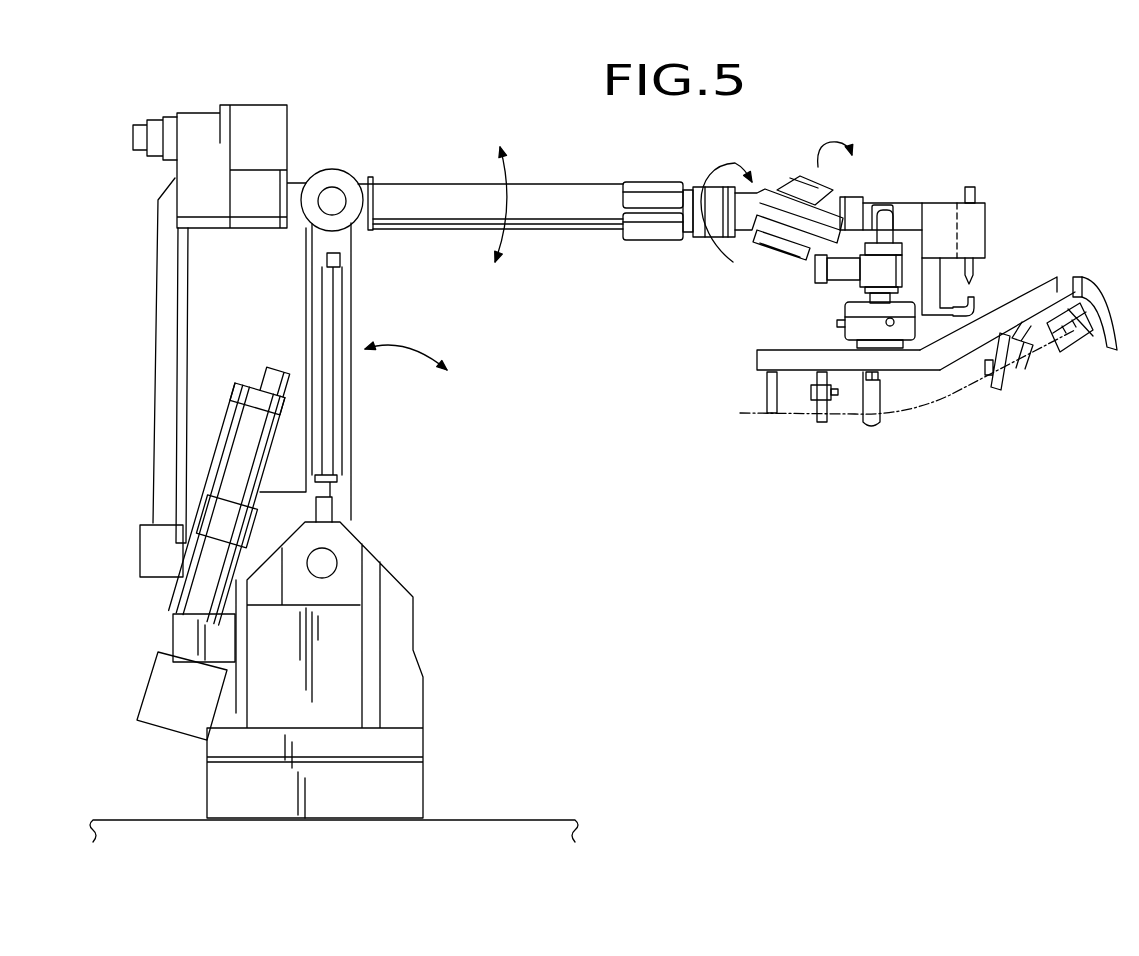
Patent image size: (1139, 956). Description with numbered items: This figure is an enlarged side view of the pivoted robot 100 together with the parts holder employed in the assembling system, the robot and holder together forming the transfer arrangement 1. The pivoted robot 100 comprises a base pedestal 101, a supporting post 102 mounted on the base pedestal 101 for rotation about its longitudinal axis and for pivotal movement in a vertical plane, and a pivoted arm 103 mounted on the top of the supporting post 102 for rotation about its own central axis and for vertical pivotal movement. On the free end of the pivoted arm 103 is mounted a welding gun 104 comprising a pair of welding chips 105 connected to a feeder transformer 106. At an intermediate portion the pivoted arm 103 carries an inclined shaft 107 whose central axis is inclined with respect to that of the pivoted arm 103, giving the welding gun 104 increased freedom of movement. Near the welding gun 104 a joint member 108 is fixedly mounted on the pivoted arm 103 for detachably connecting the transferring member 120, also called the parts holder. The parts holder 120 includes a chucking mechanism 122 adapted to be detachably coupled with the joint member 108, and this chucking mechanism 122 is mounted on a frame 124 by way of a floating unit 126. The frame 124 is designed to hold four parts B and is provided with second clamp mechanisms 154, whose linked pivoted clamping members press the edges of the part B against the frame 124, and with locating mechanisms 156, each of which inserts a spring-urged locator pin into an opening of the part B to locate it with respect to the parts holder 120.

The industrial robot 1 is at (673, 138).
The pivoted robot 100 is at (144, 332).
The base pedestal 101 is at (400, 597).
The supporting post 102 is at (353, 318).
The pivoted arm 103 is at (563, 188).
The welding gun 104 is at (983, 227).
The welding chips 105 is at (972, 300).
The feeder transformer 106 is at (940, 202).
The inclined shaft 107 is at (772, 248).
The joint member 108 is at (872, 202).
The transferring member 120 is at (1045, 270).
The chucking mechanism 122 is at (838, 278).
The frame 124 is at (757, 353).
The floating unit 126 is at (845, 330).
The second clamp mechanism 154 is at (878, 405).
The locating mechanism 156 is at (818, 405).
The part B is at (940, 407).